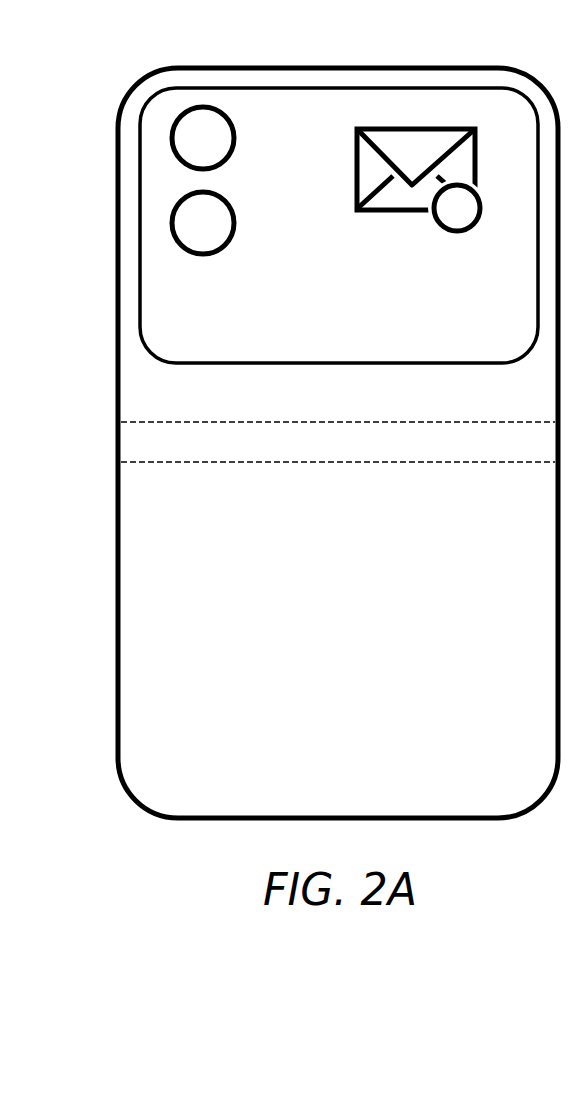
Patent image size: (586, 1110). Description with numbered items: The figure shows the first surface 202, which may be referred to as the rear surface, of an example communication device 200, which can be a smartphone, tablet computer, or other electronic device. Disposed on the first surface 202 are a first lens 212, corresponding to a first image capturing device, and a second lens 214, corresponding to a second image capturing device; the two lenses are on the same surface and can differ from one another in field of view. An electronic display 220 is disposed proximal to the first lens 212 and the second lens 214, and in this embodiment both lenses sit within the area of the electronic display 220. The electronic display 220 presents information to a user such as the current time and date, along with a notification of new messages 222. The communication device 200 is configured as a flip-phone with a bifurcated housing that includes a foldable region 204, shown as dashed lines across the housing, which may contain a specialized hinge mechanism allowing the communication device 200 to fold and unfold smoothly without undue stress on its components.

The communication device 200 is at (110, 58).
The first surface 202 is at (137, 608).
The foldable region 204 is at (128, 440).
The first lens 212 is at (171, 131).
The second lens 214 is at (172, 228).
The electronic display 220 is at (383, 345).
The notification of new messages 222 is at (478, 177).